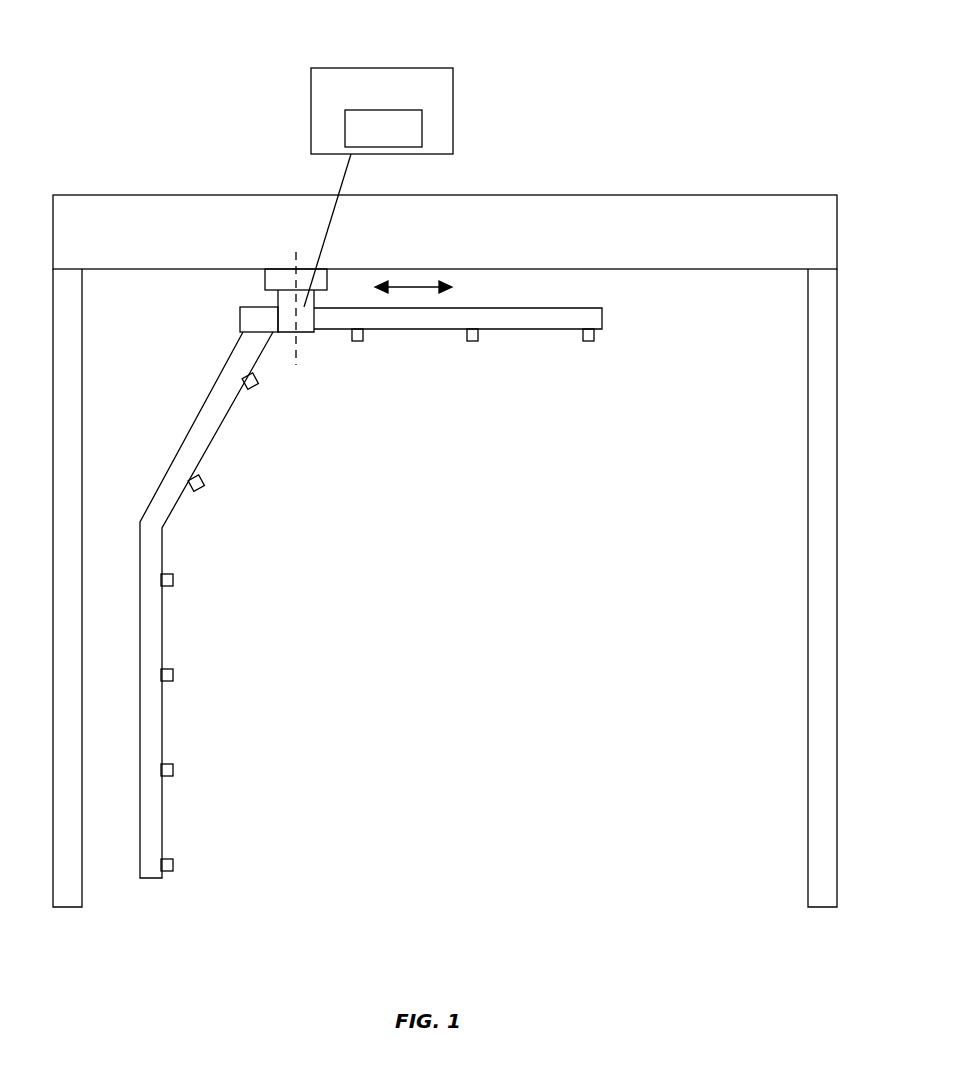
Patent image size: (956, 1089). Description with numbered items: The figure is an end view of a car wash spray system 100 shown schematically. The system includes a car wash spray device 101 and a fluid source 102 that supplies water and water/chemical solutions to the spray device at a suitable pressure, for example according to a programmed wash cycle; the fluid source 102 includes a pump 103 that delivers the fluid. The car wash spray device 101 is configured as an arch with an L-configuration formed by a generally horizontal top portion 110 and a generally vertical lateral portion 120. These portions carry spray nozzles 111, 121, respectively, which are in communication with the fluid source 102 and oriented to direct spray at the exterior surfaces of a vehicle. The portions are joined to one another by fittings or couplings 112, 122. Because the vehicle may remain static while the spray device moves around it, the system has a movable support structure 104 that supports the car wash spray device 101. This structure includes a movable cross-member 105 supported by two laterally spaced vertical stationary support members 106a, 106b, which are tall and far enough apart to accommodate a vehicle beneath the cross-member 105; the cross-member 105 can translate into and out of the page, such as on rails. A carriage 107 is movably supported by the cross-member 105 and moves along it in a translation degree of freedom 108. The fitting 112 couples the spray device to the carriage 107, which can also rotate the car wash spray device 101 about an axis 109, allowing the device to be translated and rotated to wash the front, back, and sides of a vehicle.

The car wash spray system 100 is at (247, 36).
The car wash spray device 101 is at (202, 316).
The fluid source 102 is at (453, 82).
The pump 103 is at (422, 128).
The movable support structure 104 is at (559, 166).
The cross-member 105 is at (668, 195).
The vertical stationary support member 106a is at (82, 417).
The vertical stationary support member 106b is at (808, 444).
The carriage 107 is at (283, 276).
The translation degree of freedom 108 is at (420, 287).
The axis 109 is at (297, 349).
The horizontal top portion 110 is at (403, 376).
The spray nozzles 111 is at (470, 343).
The fitting 112 is at (303, 322).
The vertical lateral portion 120 is at (226, 528).
The spray nozzles 121 is at (173, 673).
The fitting 122 is at (258, 323).